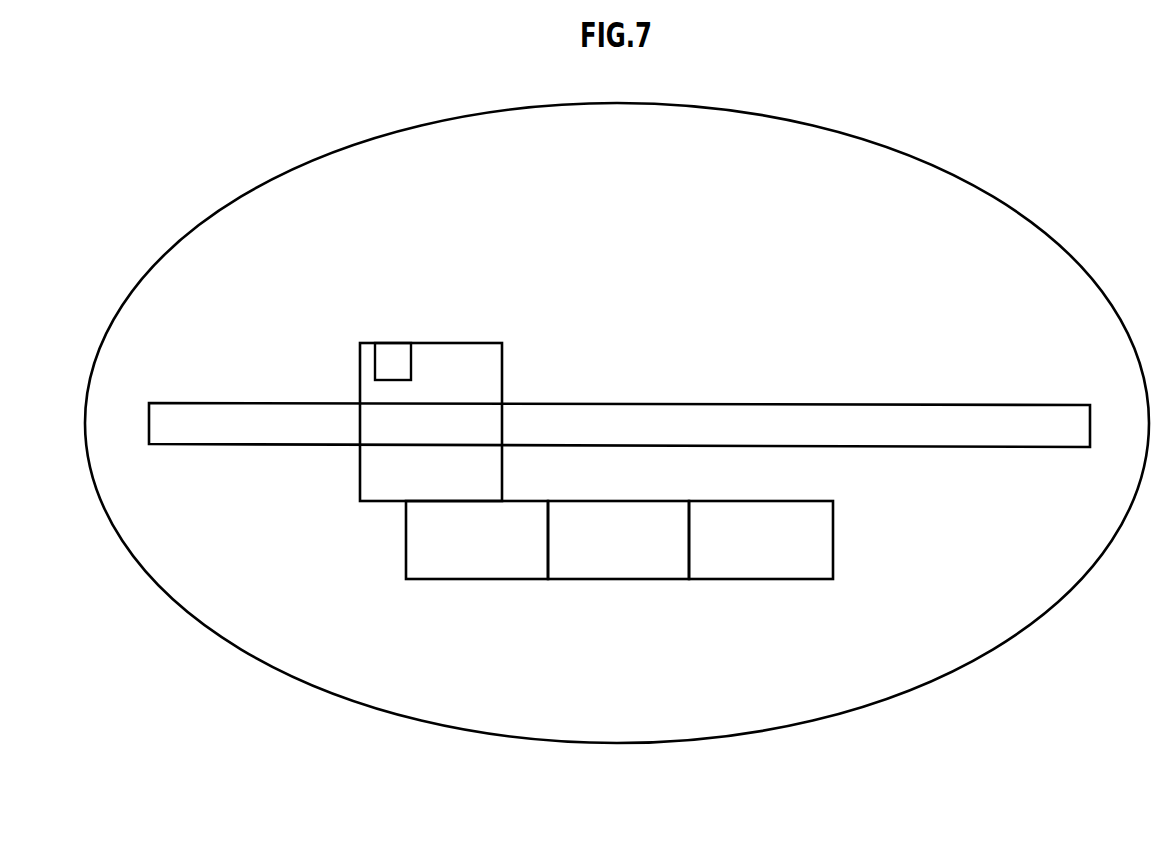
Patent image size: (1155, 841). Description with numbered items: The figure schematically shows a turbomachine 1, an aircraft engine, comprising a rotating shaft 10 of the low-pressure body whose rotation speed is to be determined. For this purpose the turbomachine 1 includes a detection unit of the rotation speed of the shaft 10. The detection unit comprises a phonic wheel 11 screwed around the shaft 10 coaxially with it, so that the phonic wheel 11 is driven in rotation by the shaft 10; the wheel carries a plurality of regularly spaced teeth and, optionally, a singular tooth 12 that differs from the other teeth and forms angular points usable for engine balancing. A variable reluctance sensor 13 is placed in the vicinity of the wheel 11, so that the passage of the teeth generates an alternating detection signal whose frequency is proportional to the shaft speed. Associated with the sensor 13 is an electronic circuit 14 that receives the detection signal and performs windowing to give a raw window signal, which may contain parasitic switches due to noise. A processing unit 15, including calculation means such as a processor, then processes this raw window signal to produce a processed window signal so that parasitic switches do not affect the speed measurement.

The turbomachine 1 is at (611, 286).
The rotating shaft 10 is at (607, 434).
The phonic wheel 11 is at (420, 387).
The singular tooth 12 is at (382, 371).
The variable reluctance sensor 13 is at (464, 548).
The electronic circuit 14 is at (606, 548).
The processing unit 15 is at (748, 548).